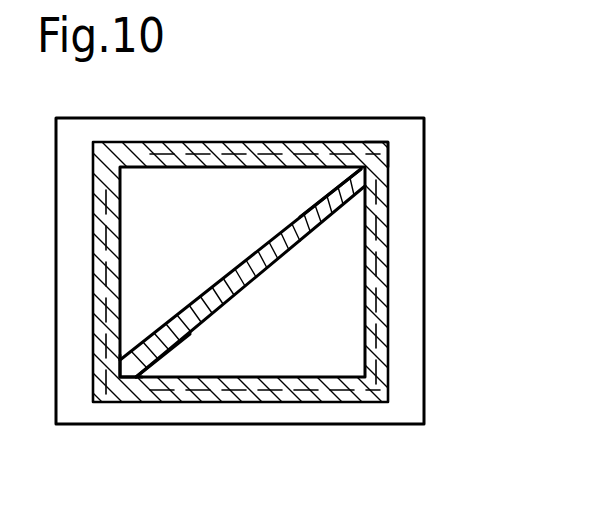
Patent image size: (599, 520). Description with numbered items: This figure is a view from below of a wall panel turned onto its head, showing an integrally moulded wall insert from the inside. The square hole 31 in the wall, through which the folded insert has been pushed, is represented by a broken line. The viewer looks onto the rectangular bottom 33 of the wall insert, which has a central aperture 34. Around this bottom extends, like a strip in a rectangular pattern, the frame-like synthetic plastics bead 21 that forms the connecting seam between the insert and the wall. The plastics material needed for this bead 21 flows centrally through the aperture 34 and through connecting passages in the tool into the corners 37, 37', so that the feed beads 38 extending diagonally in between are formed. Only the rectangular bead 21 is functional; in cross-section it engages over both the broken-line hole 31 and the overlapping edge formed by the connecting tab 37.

The synthetic plastics bead 21 is at (365, 211).
The square hole 31 is at (322, 398).
The top wall panel 33 is at (335, 282).
The central aperture 34 is at (240, 287).
The connecting tab 37 is at (418, 114).
The corner 37' is at (90, 437).
The feed bead 38 is at (157, 346).